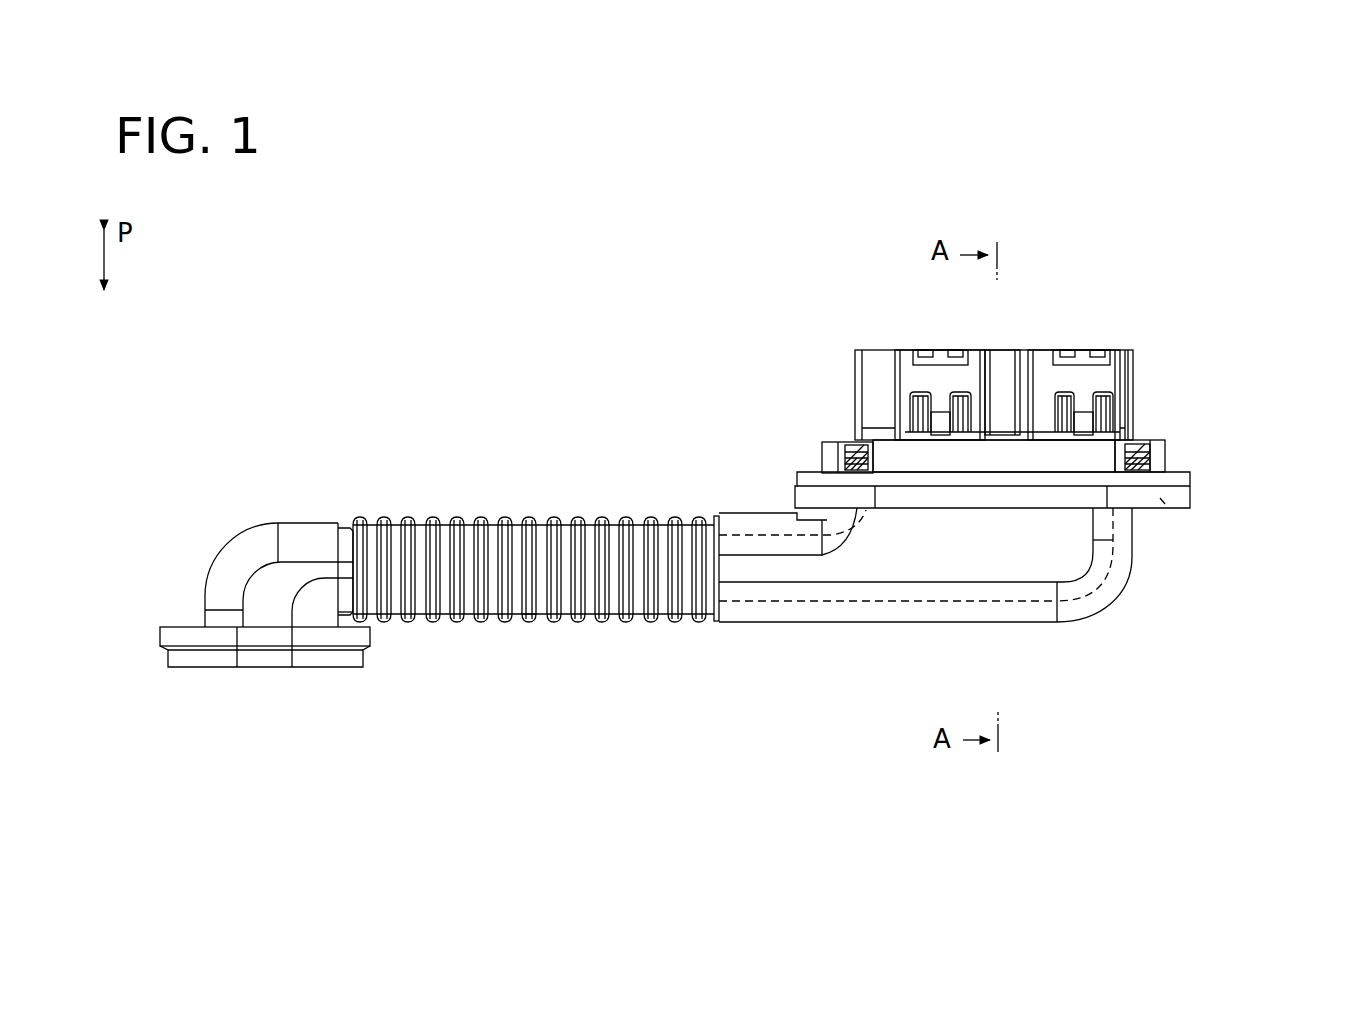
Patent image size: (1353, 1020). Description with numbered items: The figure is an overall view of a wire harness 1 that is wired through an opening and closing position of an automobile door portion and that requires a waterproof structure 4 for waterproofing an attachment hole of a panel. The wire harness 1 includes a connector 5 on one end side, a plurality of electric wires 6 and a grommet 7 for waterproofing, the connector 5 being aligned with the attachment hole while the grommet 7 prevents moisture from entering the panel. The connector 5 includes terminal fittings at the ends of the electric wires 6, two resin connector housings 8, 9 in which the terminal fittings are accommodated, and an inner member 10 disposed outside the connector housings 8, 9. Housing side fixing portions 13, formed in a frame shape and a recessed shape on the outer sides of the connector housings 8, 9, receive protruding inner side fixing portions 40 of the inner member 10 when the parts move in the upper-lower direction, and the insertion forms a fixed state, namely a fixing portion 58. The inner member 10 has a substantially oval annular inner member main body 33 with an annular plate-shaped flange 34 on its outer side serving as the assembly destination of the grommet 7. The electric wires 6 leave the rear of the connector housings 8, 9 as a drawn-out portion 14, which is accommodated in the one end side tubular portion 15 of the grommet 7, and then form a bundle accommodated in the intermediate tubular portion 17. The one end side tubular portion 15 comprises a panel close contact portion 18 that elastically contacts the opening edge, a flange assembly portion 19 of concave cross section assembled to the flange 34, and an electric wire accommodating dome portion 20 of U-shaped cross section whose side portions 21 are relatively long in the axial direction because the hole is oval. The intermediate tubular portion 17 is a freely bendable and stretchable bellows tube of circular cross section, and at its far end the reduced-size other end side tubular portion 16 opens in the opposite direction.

The wire harness 1 is at (300, 400).
The waterproof structure 4 is at (790, 462).
The connector 5 is at (1152, 438).
The electric wires 6 is at (783, 600).
The grommet 7 is at (482, 510).
The connector housing 8 is at (858, 374).
The connector housing 9 is at (1133, 368).
The inner member 10 is at (836, 442).
The housing side fixing portions 13 is at (888, 378).
The drawn-out portion 14 is at (1115, 530).
The one end side tubular portion 15 is at (1140, 558).
The other end side tubular portion 16 is at (233, 540).
The intermediate tubular portion 17 is at (528, 624).
The panel close contact portion 18 is at (1195, 475).
The flange assembly portion 19 is at (1190, 490).
The electric wire accommodating dome portion 20 is at (1038, 612).
The side portions 21 is at (968, 555).
The inner member main body 33 is at (1168, 450).
The flange 34 is at (1180, 510).
The inner side fixing portions 40 is at (940, 355).
The fixing portion 58 is at (912, 270).